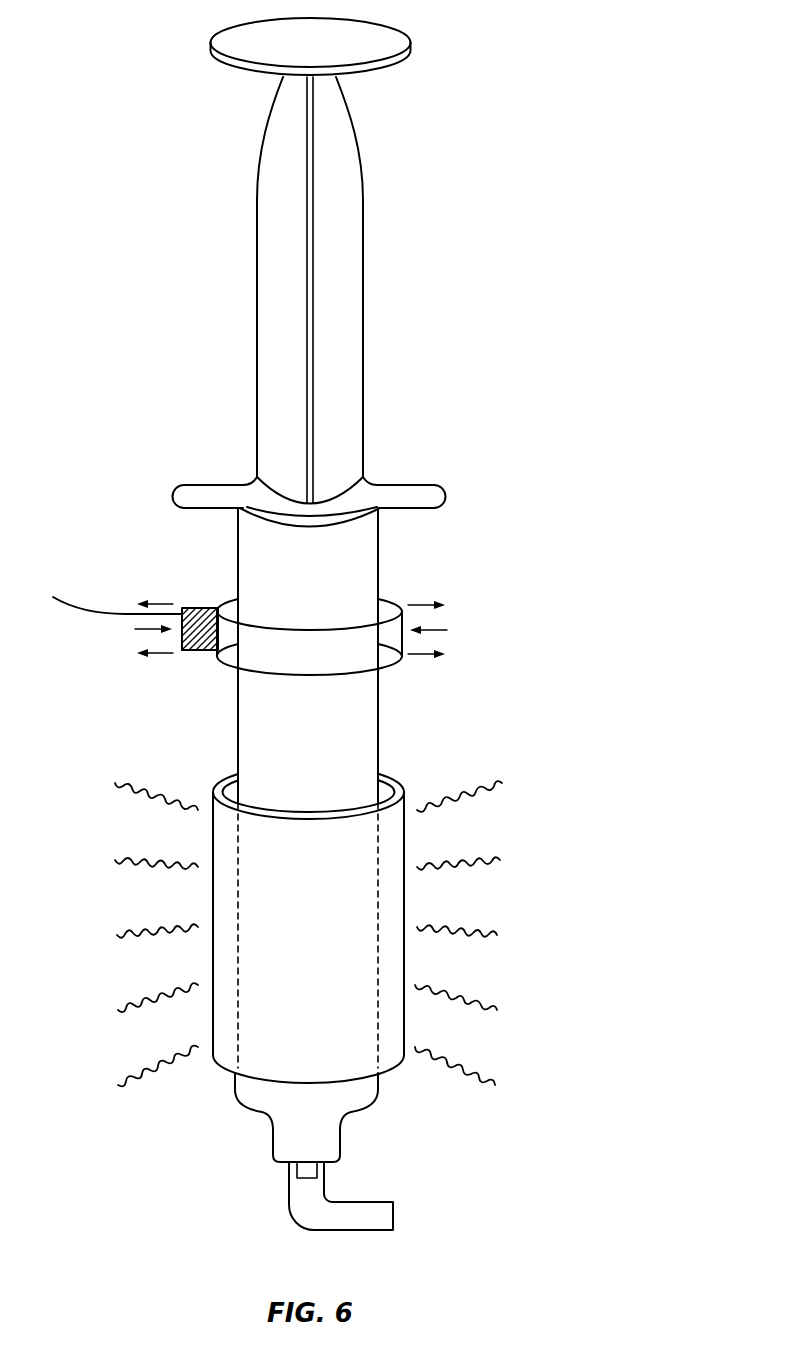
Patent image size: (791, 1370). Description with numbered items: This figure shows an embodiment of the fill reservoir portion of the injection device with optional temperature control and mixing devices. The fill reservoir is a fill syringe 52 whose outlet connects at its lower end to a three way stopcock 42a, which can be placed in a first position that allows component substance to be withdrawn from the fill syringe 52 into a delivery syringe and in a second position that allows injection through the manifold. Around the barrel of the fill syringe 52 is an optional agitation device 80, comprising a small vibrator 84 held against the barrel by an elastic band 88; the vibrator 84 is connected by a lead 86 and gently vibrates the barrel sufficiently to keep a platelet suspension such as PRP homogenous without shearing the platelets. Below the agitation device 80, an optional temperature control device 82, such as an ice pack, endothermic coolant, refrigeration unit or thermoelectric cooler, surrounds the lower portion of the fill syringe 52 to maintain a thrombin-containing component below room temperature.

The fill syringe 52 is at (373, 555).
The agitation device 80 is at (407, 590).
The temperature control device 82 is at (288, 905).
The vibrator 84 is at (198, 650).
The lead wire 86 is at (88, 611).
The elastic band 88 is at (373, 657).
The three way stopcock 42a is at (298, 1225).